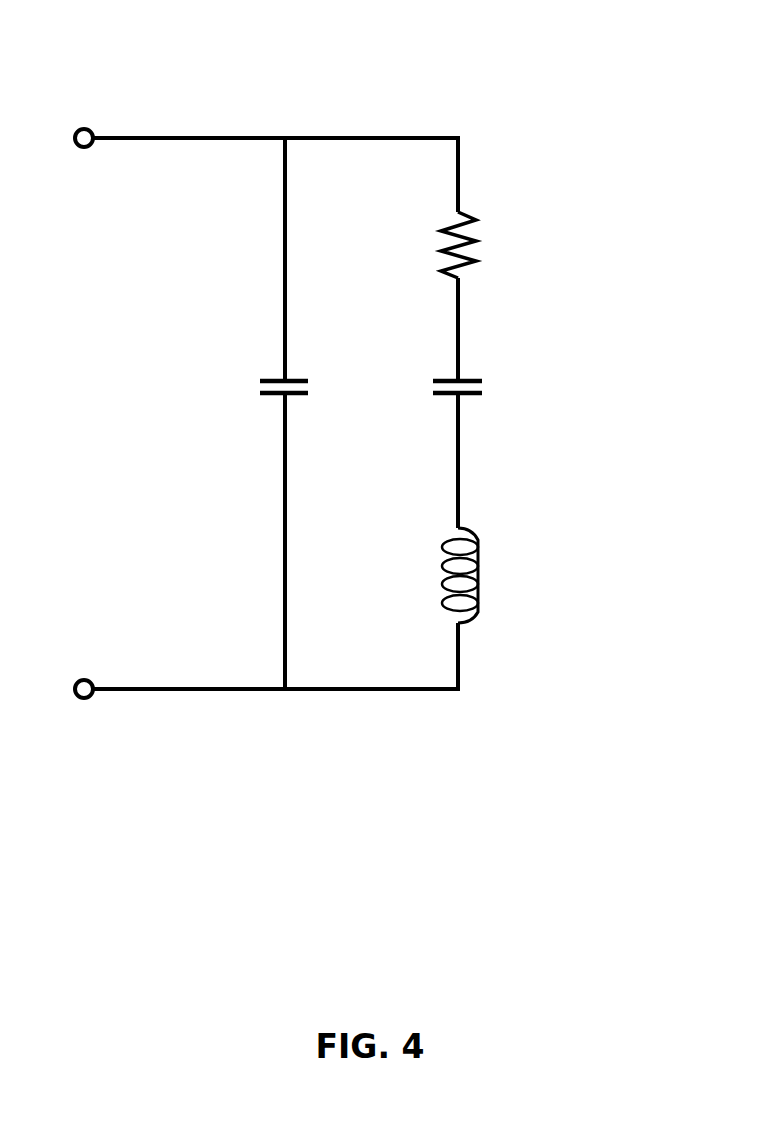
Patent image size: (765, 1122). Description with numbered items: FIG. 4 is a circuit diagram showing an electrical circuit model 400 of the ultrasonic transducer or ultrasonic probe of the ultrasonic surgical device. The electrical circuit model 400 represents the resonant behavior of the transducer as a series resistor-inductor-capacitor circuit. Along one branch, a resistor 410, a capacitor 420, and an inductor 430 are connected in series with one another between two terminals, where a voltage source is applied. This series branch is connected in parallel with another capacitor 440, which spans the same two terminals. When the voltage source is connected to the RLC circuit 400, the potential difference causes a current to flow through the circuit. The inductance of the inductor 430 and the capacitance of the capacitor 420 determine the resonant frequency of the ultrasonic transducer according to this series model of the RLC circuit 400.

The electrical circuit model 400 is at (527, 99).
The resistor 410 is at (492, 241).
The capacitor 420 is at (493, 362).
The inductor 430 is at (492, 565).
The another capacitor 440 is at (303, 362).